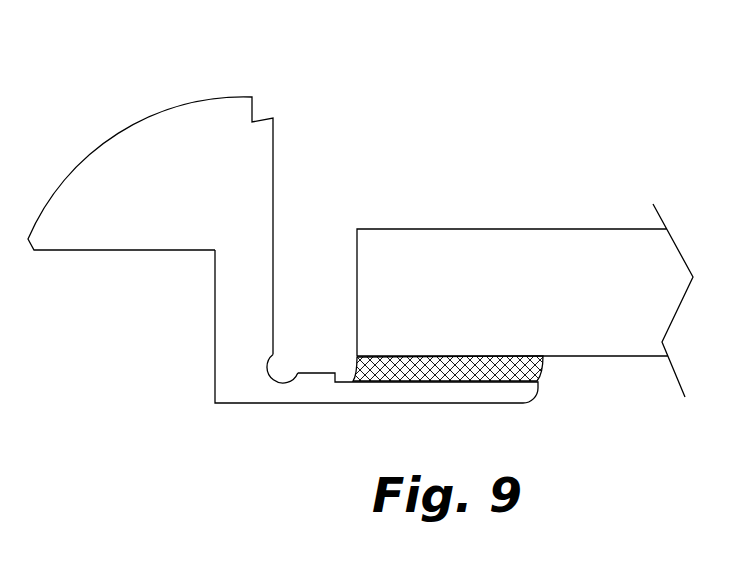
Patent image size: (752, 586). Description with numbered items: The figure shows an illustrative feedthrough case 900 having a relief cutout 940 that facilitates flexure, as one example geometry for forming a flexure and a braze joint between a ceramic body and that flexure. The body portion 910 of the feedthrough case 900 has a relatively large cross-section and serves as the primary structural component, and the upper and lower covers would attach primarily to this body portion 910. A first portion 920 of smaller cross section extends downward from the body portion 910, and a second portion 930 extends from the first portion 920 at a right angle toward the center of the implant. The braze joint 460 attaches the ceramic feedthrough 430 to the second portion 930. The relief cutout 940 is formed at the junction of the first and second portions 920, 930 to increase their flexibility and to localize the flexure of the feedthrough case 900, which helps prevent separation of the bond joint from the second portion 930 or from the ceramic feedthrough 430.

The feedthrough case 900 is at (338, 97).
The body portion 910 is at (143, 227).
The first portion 920 is at (227, 333).
The second portion 930 is at (333, 388).
The relief cutout 940 is at (272, 378).
The ceramic feedthrough 430 is at (563, 303).
The braze joint 460 is at (542, 367).